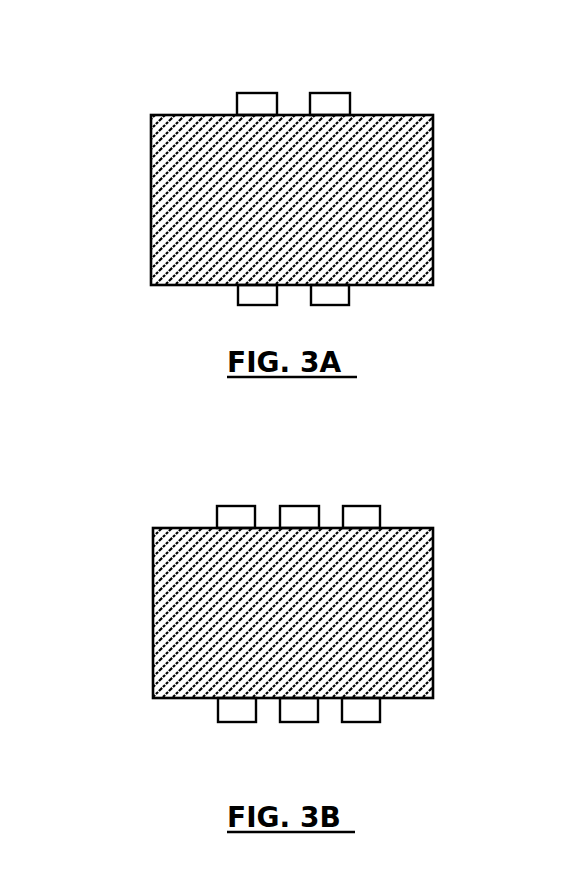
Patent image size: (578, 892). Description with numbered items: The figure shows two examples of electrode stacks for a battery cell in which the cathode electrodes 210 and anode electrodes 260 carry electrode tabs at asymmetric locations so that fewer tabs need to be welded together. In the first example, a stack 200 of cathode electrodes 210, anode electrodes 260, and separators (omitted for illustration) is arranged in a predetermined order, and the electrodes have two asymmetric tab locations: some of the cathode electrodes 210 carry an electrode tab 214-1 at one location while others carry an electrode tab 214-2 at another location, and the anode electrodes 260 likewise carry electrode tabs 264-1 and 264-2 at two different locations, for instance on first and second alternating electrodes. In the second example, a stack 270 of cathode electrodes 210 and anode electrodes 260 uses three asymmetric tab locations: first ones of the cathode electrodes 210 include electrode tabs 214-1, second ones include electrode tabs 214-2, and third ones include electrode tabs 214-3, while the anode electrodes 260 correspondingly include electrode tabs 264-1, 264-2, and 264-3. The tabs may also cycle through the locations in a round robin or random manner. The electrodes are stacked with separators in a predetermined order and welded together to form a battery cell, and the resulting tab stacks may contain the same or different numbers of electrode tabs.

In FIG. 3A, the stack 200 is at (131, 70).
In FIG. 3B, the stack 270 is at (134, 482).
In FIG. 3A, the cathode electrodes 210 is at (424, 170).
In FIG. 3B, the cathode electrodes 210 is at (423, 580).
In FIG. 3A, the electrode tab 214-1 is at (257, 93).
In FIG. 3B, the electrode tab 214-1 is at (236, 506).
In FIG. 3A, the electrode tab 214-2 is at (349, 93).
In FIG. 3B, the electrode tab 214-2 is at (298, 506).
In FIG. 3B, the electrode tab 214-3 is at (381, 506).
In FIG. 3A, the electrode tab 264-1 is at (238, 299).
In FIG. 3B, the electrode tab 264-1 is at (217, 711).
In FIG. 3A, the electrode tab 264-2 is at (349, 297).
In FIG. 3B, the electrode tab 264-2 is at (293, 722).
In FIG. 3B, the electrode tab 264-3 is at (368, 722).
In FIG. 3A, the anode electrodes 260 is at (440, 213).
In FIG. 3B, the anode electrodes 260 is at (449, 637).